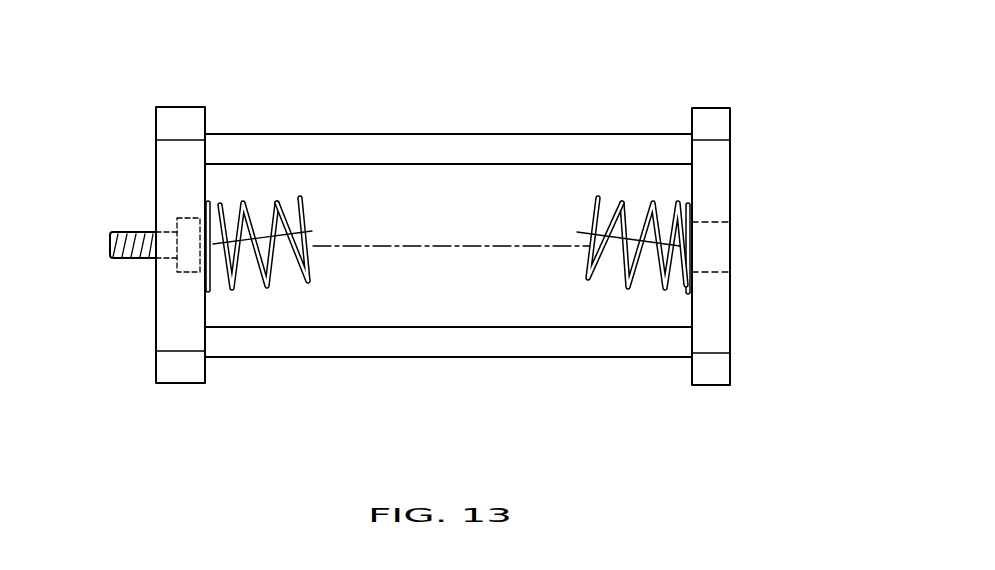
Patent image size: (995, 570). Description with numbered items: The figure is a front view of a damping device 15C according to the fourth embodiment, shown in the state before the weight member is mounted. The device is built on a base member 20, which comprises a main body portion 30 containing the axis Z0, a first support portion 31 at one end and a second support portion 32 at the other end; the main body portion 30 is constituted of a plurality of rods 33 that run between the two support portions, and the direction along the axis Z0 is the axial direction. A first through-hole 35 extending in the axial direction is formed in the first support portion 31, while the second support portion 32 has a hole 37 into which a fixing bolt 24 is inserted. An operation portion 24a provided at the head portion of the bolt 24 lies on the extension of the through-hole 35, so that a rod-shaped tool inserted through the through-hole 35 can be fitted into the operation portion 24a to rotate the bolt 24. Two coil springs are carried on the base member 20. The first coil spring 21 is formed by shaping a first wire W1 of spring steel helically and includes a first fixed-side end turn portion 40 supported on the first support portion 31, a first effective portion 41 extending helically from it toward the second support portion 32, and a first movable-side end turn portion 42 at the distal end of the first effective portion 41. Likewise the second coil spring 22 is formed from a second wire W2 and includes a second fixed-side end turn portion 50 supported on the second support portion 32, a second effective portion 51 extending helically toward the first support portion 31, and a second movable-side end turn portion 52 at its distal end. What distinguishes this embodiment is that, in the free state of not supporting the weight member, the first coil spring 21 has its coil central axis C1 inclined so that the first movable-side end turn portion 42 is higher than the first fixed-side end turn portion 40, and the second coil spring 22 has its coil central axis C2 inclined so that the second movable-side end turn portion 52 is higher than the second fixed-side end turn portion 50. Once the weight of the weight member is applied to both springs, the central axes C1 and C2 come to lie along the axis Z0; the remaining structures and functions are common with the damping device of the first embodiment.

The damping device 15C is at (506, 110).
The base member 20 is at (230, 359).
The main body portion 30 is at (561, 362).
The rods 33 is at (376, 145).
The second support portion 32 is at (163, 322).
The first support portion 31 is at (716, 331).
The first through-hole 35 is at (720, 272).
The fixing bolt 24 is at (118, 233).
The hole 37 is at (160, 250).
The operation portion 24a is at (190, 218).
The axis Z0 is at (461, 243).
The second fixed-side end turn portion 50 is at (215, 202).
The second wire W2 is at (275, 262).
The second coil spring 22 is at (250, 200).
The second effective portion 51 is at (278, 200).
The second movable-side end turn portion 52 is at (305, 205).
The coil central axis C2 is at (312, 227).
The first fixed-side end turn portion 40 is at (692, 212).
The first wire W1 is at (660, 270).
The first coil spring 21 is at (655, 200).
The first effective portion 41 is at (626, 205).
The first movable-side end turn portion 42 is at (592, 212).
The coil central axis C1 is at (578, 233).